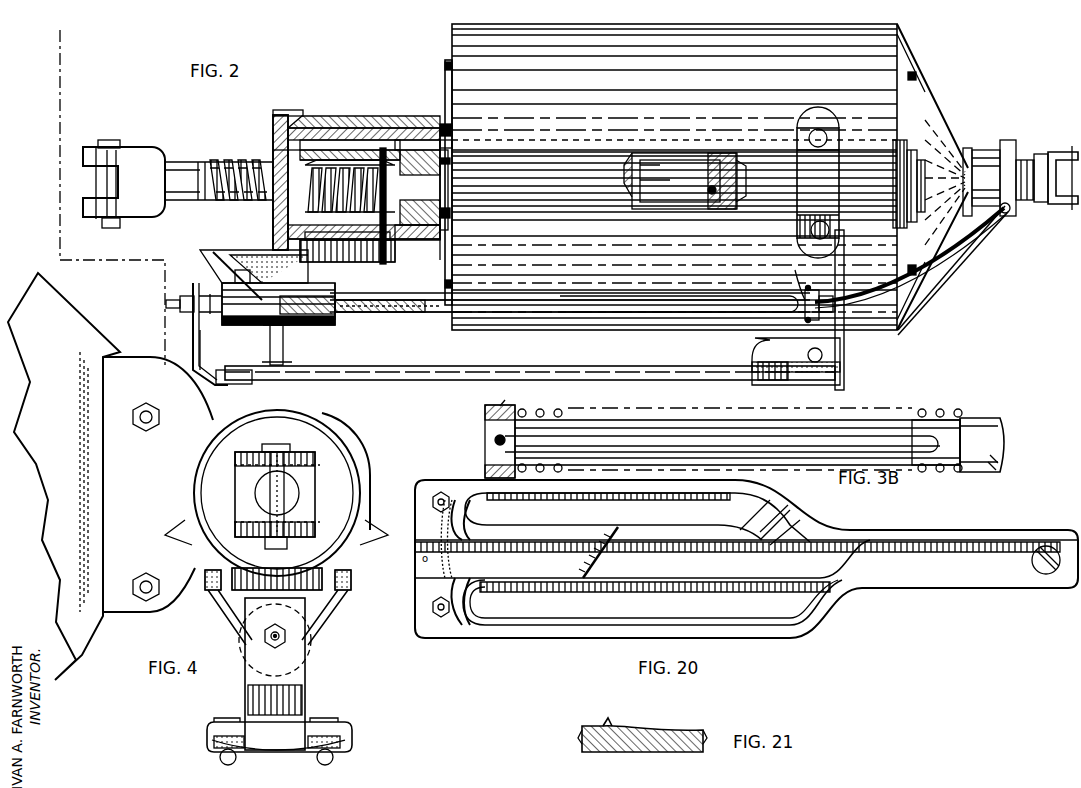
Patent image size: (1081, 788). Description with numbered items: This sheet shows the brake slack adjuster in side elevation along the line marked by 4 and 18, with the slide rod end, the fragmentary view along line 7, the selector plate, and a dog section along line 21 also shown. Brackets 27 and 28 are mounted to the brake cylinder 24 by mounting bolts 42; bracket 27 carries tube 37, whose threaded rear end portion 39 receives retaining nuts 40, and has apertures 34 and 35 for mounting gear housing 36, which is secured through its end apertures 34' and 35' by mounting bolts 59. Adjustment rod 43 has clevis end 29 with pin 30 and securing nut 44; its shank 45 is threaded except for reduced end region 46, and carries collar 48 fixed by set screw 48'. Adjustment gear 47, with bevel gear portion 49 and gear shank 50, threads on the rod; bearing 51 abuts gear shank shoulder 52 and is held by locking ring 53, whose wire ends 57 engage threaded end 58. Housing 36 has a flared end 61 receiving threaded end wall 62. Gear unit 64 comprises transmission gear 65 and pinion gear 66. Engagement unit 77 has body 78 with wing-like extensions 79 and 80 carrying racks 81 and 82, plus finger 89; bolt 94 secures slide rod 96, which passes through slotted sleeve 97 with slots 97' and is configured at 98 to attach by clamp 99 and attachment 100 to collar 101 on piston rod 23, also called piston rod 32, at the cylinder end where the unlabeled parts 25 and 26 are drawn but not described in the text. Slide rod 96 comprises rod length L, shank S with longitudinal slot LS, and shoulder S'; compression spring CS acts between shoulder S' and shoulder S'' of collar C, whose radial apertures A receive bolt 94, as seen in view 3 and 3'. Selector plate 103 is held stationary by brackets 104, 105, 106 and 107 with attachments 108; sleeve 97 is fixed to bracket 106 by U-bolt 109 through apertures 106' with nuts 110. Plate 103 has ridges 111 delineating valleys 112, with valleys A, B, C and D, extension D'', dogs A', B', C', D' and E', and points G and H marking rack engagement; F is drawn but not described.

In FIG. 2, the section line 4— 4 is at (78, 30).
In FIG. 2, the section line 18— 18 is at (266, 134).
In FIG. 4, the section line 7— 7 is at (200, 580).
In FIG. 2, the piston rod 23 is at (1038, 140).
In FIG. 2, the brake cylinder 24 is at (691, 34).
In FIG. 2, the clevis 25 is at (1036, 160).
In FIG. 2, the tube 26 is at (584, 154).
In FIG. 2, the bracket 27 is at (446, 76).
In FIG. 4, the bracket 27 is at (372, 434).
In FIG. 2, the bracket 28 is at (930, 86).
In FIG. 2, the clevis end 29 is at (134, 139).
In FIG. 4, the clevis end 29 is at (294, 452).
In FIG. 2, the pin 30 is at (115, 137).
In FIG. 4, the pin 30 is at (275, 444).
In FIG. 2, the piston rod 32 is at (983, 154).
In FIG. 2, the aperture 34 is at (462, 117).
In FIG. 2, the end aperture 34' is at (469, 145).
In FIG. 2, the aperture 35 is at (438, 205).
In FIG. 2, the end aperture 35' is at (418, 254).
In FIG. 2, the gear housing 36 is at (384, 130).
In FIG. 4, the gear housing 36 is at (358, 480).
In FIG. 2, the tube 37 is at (538, 152).
In FIG. 2, the rear end portion 39 is at (892, 144).
In FIG. 2, the retaining nuts 40 is at (914, 138).
In FIG. 2, the mounting bolts 42 is at (438, 62).
In FIG. 2, the adjustment rod 43 is at (180, 156).
In FIG. 2, the securing nut 44 is at (105, 222).
In FIG. 2, the shank 45 is at (214, 201).
In FIG. 4, the shank 45 is at (296, 490).
In FIG. 2, the end region 46 is at (676, 150).
In FIG. 2, the adjustment gear 47 is at (324, 116).
In FIG. 2, the collar 48 is at (734, 161).
In FIG. 2, the set screw 48' is at (711, 210).
In FIG. 2, the bevel gear portion 49 is at (306, 118).
In FIG. 2, the gear shank 50 is at (354, 137).
In FIG. 2, the bearing 51 is at (332, 130).
In FIG. 2, the gear shank shoulder 52 is at (284, 150).
In FIG. 2, the locking ring 53 is at (400, 130).
In FIG. 2, the wire ends 57 is at (383, 246).
In FIG. 2, the threaded end 58 is at (426, 128).
In FIG. 2, the mounting bolts 59 is at (460, 134).
In FIG. 2, the flared end 61 is at (285, 114).
In FIG. 2, the end wall 62 is at (280, 112).
In FIG. 4, the end wall 62 is at (356, 464).
In FIG. 2, the gear unit 64 is at (358, 277).
In FIG. 2, the transmission gear 65 is at (406, 232).
In FIG. 2, the pinion gear 66 is at (336, 242).
In FIG. 2, the engagement unit 77 is at (331, 326).
In FIG. 2, the body 78 is at (345, 126).
In FIG. 4, the wing-like extension 79 is at (224, 624).
In FIG. 4, the wing-like extension 80 is at (342, 634).
In FIG. 4, the rack 81 is at (208, 599).
In FIG. 2, the rack 82 is at (200, 252).
In FIG. 4, the rack 82 is at (348, 600).
In FIG. 2, the finger 89 is at (284, 362).
In FIG. 2, the bolt 94 is at (205, 288).
In FIG. 3B, the bolt 94 is at (483, 440).
In FIG. 2, the slide rod 96 is at (396, 310).
In FIG. 3B, the slide rod 96 is at (821, 430).
In FIG. 2, the slotted sleeve 97 is at (570, 278).
In FIG. 2, the sleeve slots 97' is at (570, 284).
In FIG. 2, the configured portion 98 is at (986, 236).
In FIG. 2, the clamp 99 is at (1018, 212).
In FIG. 2, the attachment 100 is at (1008, 228).
In FIG. 2, the collar 101 is at (1002, 146).
In FIG. 2, the selector plate 103 is at (650, 372).
In FIG. 4, the selector plate 103 is at (388, 710).
In FIG. 20, the selector plate 103 is at (544, 632).
In FIG. 21, the selector plate 103 is at (703, 712).
In FIG. 2, the bracket 104 is at (204, 348).
In FIG. 4, the bracket 104 is at (298, 715).
In FIG. 2, the bracket 105 is at (752, 362).
In FIG. 2, the bracket 106 is at (865, 310).
In FIG. 2, the bracket apertures 106' is at (835, 297).
In FIG. 2, the bracket 107 is at (843, 122).
In FIG. 2, the attachments 108 is at (819, 122).
In FIG. 20, the attachments 108 is at (442, 618).
In FIG. 2, the U-bolt 109 is at (824, 278).
In FIG. 2, the nuts 110 is at (816, 282).
In FIG. 20, the ridges 111 is at (682, 484).
In FIG. 20, the valleys 112 is at (580, 622).
In FIG. 20, the section line 21— 21 is at (578, 570).
In FIG. 2, the section line 3 is at (213, 313).
In FIG. 2, the section line 3' is at (336, 308).
In FIG. 3B, the collar C is at (516, 398).
In FIG. 20, the collar C is at (683, 557).
In FIG. 20, the dog C' is at (610, 552).
In FIG. 21, the dog C' is at (615, 708).
In FIG. 2, the compression spring CS is at (364, 312).
In FIG. 3B, the compression spring CS is at (564, 412).
In FIG. 3B, the shank S is at (727, 425).
In FIG. 3B, the shoulder S' is at (936, 426).
In FIG. 3B, the shoulder S'' is at (540, 432).
In FIG. 3B, the longitudinal slot LS is at (622, 438).
In FIG. 3B, the rod length L is at (773, 432).
In FIG. 20, the valley A is at (485, 597).
In FIG. 20, the dog A' is at (513, 557).
In FIG. 20, the valley B is at (683, 511).
In FIG. 20, the dog B' is at (491, 519).
In FIG. 20, the valley D is at (683, 607).
In FIG. 20, the dog D' is at (630, 511).
In FIG. 20, the extension of valley D D'' is at (963, 563).
In FIG. 20, the dog E' is at (774, 527).
In FIG. 20, the track section F is at (838, 552).
In FIG. 20, the point G is at (750, 613).
In FIG. 20, the point H is at (602, 516).